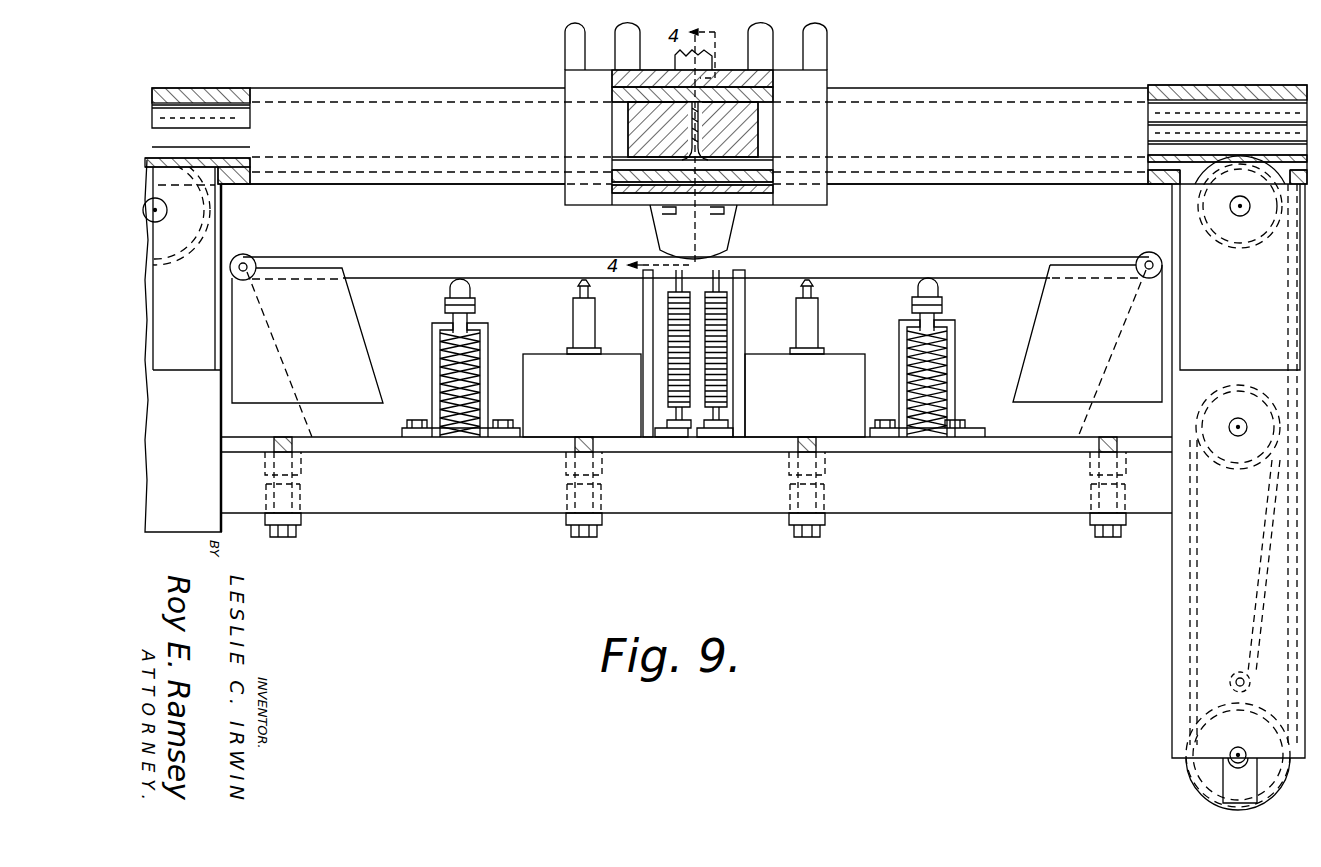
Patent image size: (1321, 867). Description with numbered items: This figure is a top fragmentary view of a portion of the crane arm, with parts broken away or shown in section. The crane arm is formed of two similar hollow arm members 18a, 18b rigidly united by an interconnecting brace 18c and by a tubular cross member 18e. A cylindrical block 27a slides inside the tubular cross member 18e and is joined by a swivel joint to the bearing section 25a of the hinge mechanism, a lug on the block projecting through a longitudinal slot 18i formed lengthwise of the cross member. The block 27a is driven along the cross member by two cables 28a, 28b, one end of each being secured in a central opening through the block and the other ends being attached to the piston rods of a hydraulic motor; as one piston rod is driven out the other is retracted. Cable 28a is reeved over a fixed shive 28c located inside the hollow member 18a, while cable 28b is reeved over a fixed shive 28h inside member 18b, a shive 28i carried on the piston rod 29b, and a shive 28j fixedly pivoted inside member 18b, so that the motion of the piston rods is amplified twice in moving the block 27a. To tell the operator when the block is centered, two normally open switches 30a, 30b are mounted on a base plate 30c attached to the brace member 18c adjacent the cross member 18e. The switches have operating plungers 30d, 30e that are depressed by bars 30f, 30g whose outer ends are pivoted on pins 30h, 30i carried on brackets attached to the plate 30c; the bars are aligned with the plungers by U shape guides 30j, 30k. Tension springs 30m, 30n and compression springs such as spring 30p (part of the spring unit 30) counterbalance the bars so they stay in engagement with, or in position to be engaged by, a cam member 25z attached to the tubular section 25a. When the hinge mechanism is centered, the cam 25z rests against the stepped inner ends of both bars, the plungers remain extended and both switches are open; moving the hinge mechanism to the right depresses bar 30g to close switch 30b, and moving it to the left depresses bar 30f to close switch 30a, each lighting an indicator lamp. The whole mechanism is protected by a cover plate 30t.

The arm member 18a is at (190, 523).
The arm member 18b is at (1175, 628).
The interconnecting brace 18c is at (370, 505).
The tubular cross member 18e is at (318, 94).
The longitudinal slot 18i is at (205, 124).
The bearing section 25a is at (815, 68).
The cam member 25z is at (722, 232).
The cylindrical block 27a is at (627, 162).
The cable 28a is at (220, 160).
The cable 28b is at (1158, 156).
The fixed shive 28c is at (157, 224).
The fixed shive 28h is at (1220, 186).
The shive 28i is at (1200, 780).
The shive 28j is at (1242, 460).
The piston rod 29b is at (1185, 738).
The right spring unit 30 is at (937, 352).
The normally open switch 30a is at (582, 395).
The normally open switch 30b is at (805, 395).
The base plate 30c is at (452, 448).
The operating plunger 30d is at (578, 291).
The operating plunger 30e is at (812, 291).
The bar 30f is at (412, 263).
The bar 30g is at (893, 264).
The pin 30h is at (250, 262).
The pin 30i is at (1145, 262).
The U shape guide 30j is at (645, 340).
The U shape guide 30k is at (740, 333).
The tension spring 30m is at (676, 372).
The tension spring 30n is at (716, 372).
The compression spring 30p is at (478, 345).
The cover plate 30t is at (338, 398).